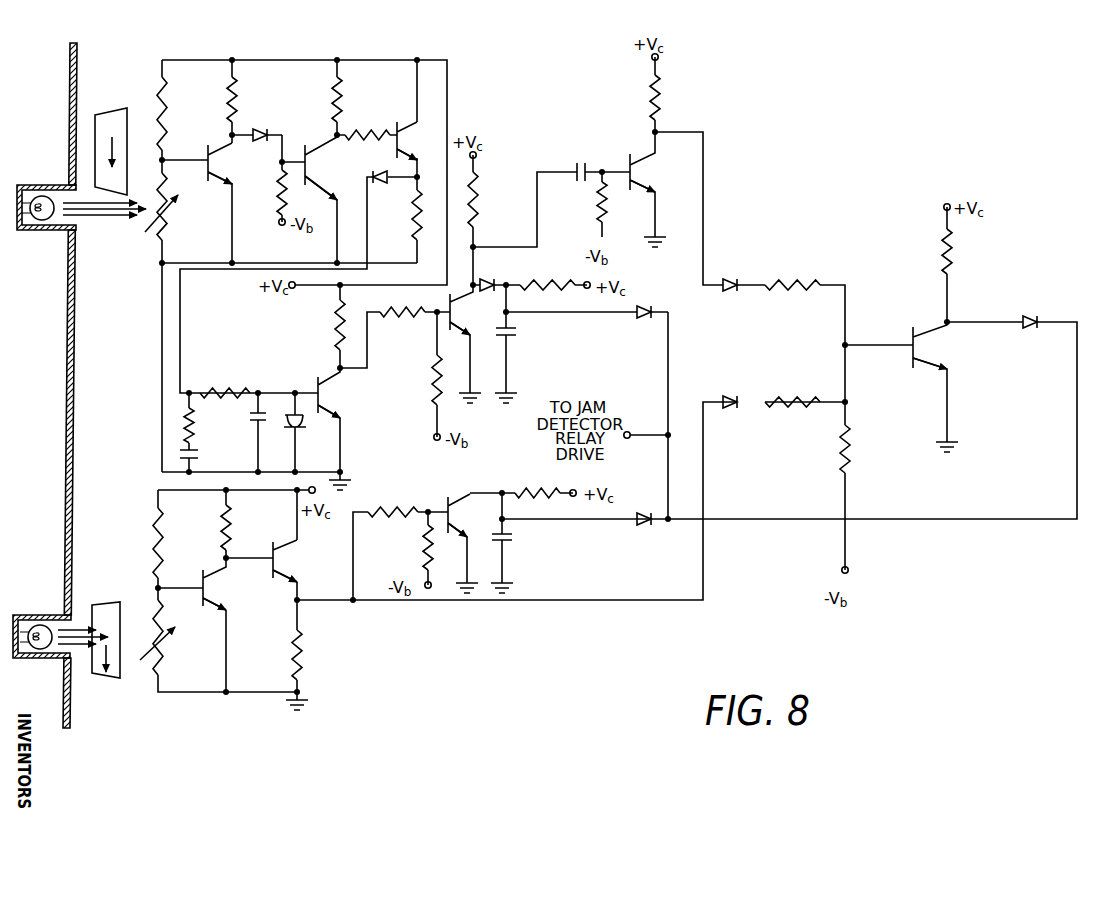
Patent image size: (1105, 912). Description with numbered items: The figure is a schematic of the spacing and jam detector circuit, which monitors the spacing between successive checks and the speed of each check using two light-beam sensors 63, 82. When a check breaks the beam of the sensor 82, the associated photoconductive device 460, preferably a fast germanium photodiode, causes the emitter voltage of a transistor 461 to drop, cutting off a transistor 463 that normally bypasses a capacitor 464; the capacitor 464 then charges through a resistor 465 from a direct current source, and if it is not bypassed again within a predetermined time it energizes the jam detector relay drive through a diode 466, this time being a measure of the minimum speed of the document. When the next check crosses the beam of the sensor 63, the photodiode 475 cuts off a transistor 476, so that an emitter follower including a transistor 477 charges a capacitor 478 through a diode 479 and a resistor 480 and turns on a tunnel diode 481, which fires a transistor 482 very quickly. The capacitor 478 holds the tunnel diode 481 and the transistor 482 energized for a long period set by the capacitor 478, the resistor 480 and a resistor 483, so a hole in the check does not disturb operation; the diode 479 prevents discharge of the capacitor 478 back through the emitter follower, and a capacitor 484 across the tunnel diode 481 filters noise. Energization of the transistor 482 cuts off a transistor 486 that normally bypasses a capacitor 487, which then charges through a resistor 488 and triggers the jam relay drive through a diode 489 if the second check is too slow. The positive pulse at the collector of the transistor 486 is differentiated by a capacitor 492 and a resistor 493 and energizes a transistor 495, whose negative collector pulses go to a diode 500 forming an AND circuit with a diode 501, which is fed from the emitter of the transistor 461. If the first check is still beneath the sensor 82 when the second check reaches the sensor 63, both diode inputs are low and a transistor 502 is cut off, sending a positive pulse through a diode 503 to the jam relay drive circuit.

The sensor 63 is at (50, 235).
The sensor 82 is at (53, 607).
The photodiode 475 is at (168, 218).
The transistor 476 is at (304, 152).
The transistor 477 is at (398, 132).
The capacitor 478 is at (198, 456).
The diode 479 is at (386, 186).
The resistor 480 is at (195, 432).
The tunnel diode 481 is at (304, 423).
The transistor 482 is at (320, 392).
The resistor 483 is at (217, 389).
The capacitor 484 is at (264, 402).
The transistor 486 is at (473, 336).
The capacitor 487 is at (510, 338).
The resistor 488 is at (547, 267).
The diode 489 is at (641, 320).
The capacitor 492 is at (576, 164).
The resistor 493 is at (600, 206).
The transistor 495 is at (630, 158).
The photoconductive device 460 is at (160, 653).
The transistor 461 is at (272, 570).
The transistor 463 is at (447, 505).
The capacitor 464 is at (508, 543).
The resistor 465 is at (542, 488).
The diode 466 is at (642, 528).
The diode 500 is at (732, 277).
The diode 501 is at (730, 396).
The transistor 502 is at (912, 352).
The diode 503 is at (1036, 300).